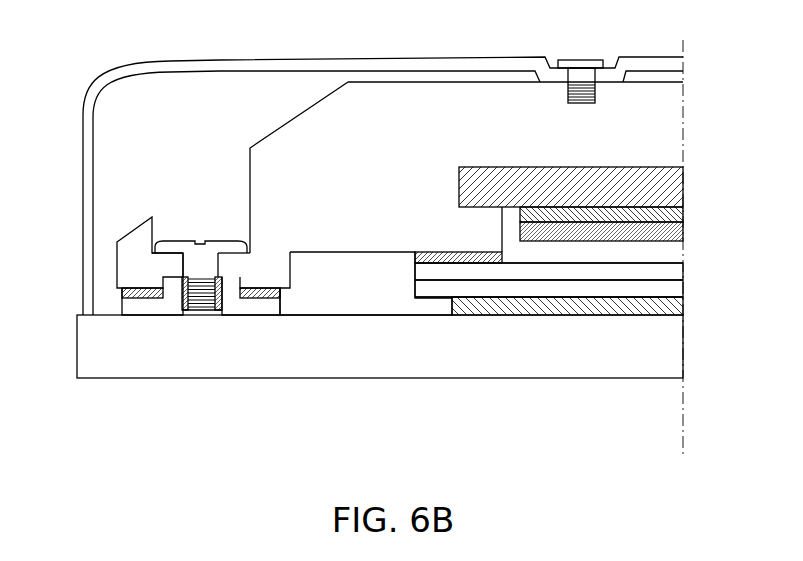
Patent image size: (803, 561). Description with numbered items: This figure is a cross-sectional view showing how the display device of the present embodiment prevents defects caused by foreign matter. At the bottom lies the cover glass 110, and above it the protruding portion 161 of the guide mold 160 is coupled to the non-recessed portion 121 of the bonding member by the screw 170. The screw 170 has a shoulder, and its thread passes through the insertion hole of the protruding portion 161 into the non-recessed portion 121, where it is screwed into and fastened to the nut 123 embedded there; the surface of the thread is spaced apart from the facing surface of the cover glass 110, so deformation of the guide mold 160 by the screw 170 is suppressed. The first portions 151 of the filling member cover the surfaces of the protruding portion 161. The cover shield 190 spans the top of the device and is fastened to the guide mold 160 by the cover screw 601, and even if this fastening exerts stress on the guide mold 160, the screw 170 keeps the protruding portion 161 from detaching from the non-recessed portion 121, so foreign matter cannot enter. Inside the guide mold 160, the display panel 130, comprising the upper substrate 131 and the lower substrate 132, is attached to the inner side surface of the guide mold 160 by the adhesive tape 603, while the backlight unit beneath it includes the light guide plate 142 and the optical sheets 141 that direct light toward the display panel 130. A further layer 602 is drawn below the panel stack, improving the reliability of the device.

The cover glass 110 is at (103, 352).
The non-recessed portion 121 is at (133, 307).
The nut 123 is at (183, 315).
The display panel 130 is at (748, 253).
The upper substrate 131 is at (657, 287).
The lower substrate 132 is at (657, 273).
The optical sheets 141 is at (662, 215).
The light guide plate 142 is at (657, 182).
The first portions 151 is at (135, 290).
The guide mold 160 is at (657, 123).
The protruding portion 161 is at (133, 242).
The screw 170 is at (177, 241).
The cover shield 190 is at (86, 116).
The cover screw 601 is at (580, 75).
The lower adhesive layer 602 is at (662, 303).
The adhesive tape 603 is at (468, 257).